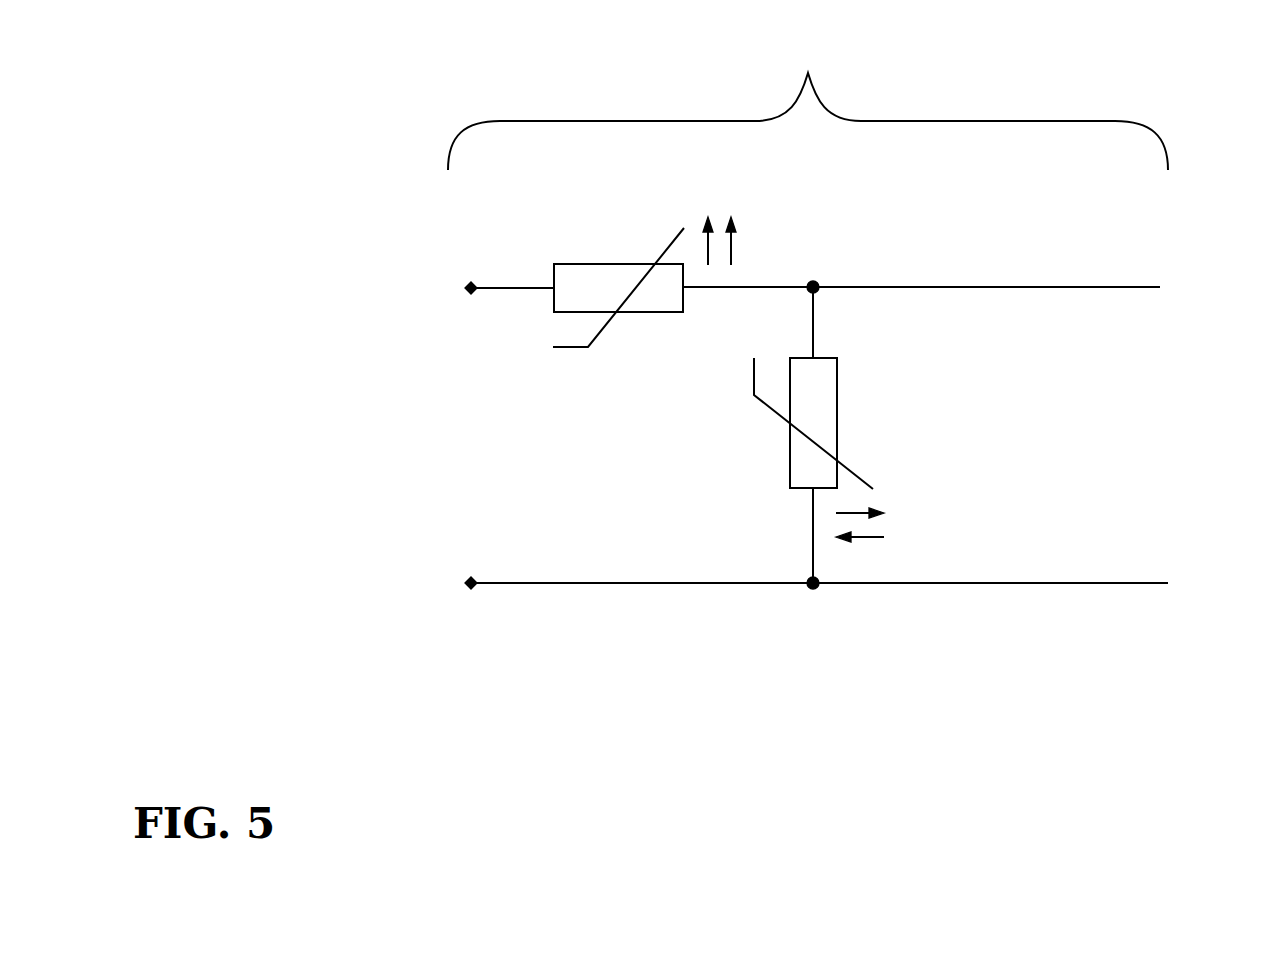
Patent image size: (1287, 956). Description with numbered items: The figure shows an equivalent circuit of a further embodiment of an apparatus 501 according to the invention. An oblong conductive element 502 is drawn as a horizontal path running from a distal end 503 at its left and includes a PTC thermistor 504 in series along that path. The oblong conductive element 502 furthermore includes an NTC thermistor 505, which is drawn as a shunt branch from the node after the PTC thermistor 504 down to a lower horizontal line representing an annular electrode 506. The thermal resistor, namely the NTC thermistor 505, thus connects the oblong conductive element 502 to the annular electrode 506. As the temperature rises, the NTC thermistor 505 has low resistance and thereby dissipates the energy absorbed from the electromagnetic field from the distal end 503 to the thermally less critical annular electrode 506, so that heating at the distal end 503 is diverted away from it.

The apparatus 501 is at (808, 105).
The oblong conductive element 502 is at (1160, 287).
The distal end 503 is at (471, 288).
The PTC thermistor 504 is at (602, 277).
The NTC thermistor 505 is at (827, 393).
The annular electrode 506 is at (471, 589).